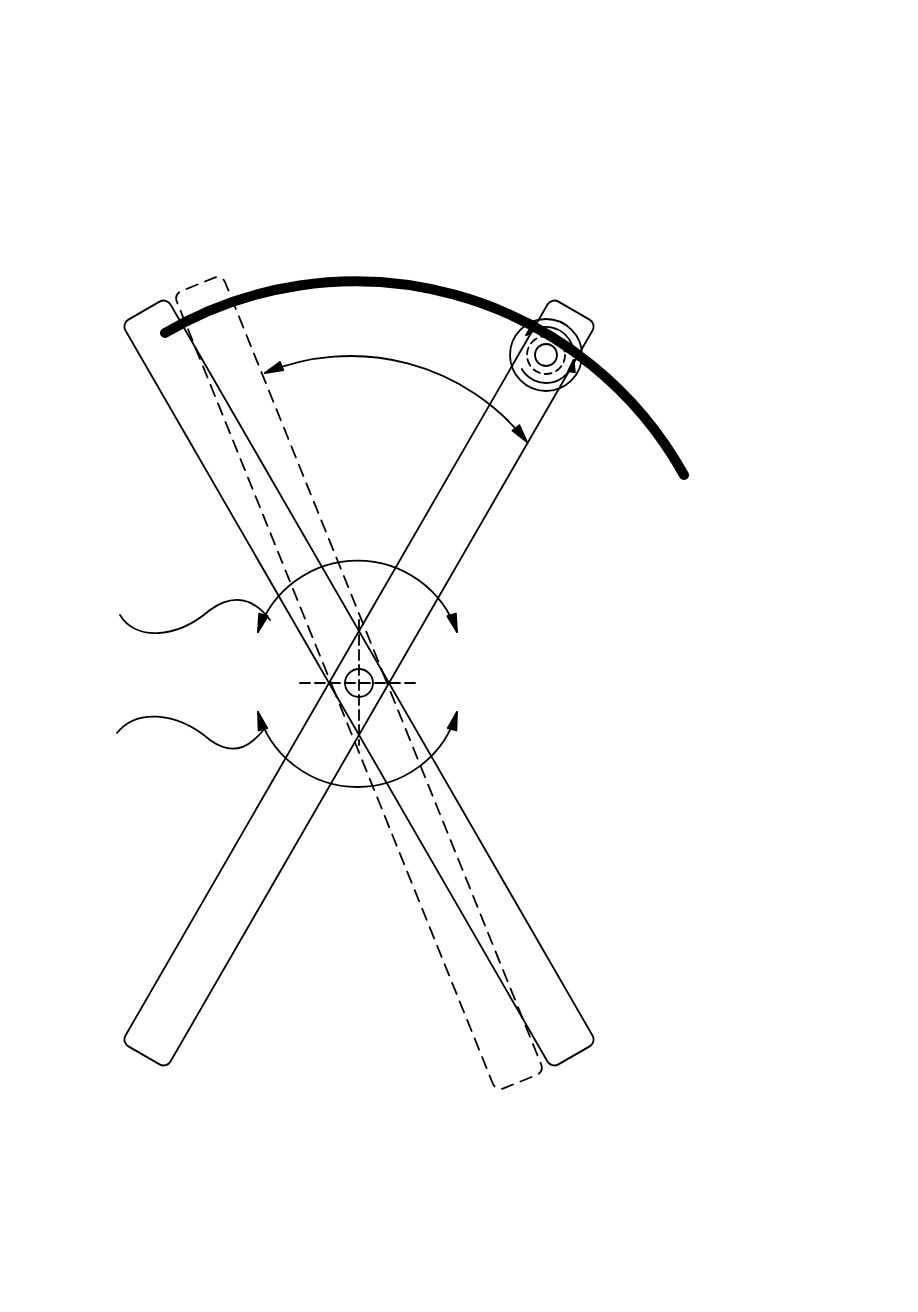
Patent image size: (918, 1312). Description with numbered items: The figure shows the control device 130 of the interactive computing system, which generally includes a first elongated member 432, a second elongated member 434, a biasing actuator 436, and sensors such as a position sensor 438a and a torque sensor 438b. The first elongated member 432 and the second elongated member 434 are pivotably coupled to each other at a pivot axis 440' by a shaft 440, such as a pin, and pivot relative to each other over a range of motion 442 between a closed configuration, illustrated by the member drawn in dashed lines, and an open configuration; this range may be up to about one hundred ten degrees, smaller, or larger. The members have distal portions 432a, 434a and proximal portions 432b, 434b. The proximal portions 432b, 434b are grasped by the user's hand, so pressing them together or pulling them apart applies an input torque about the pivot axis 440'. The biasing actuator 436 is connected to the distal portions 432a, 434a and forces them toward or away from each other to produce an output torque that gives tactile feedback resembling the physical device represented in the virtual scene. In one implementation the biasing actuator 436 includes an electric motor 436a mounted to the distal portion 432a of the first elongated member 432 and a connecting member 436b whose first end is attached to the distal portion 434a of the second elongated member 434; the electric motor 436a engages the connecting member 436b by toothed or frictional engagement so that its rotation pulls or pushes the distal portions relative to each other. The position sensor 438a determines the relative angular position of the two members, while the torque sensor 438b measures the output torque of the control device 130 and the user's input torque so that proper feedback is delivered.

The control device 130 is at (166, 106).
The first elongated member 432 is at (347, 683).
The distal portion of the first elongated member 432a is at (470, 548).
The proximal portion of the first elongated member 432b is at (188, 928).
The second elongated member 434 is at (390, 700).
The distal portion of the second elongated member 434a is at (199, 462).
The proximal portion of the second elongated member 434b is at (541, 945).
The biasing actuator 436 is at (474, 314).
The electric motor 436a is at (646, 333).
The connecting member 436b is at (297, 277).
The position sensor 438a is at (577, 372).
The torque sensor 438b is at (550, 393).
The shaft 440 is at (422, 665).
The pivot axis 440' is at (434, 665).
The range of motion 442 is at (372, 356).